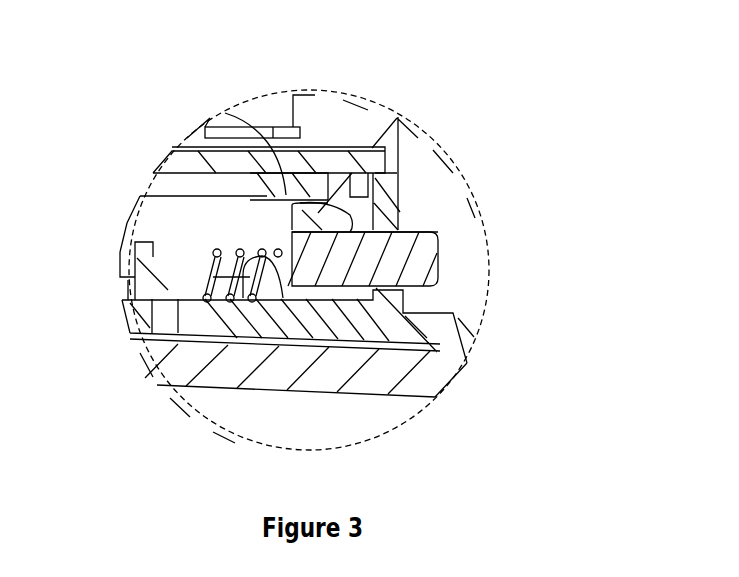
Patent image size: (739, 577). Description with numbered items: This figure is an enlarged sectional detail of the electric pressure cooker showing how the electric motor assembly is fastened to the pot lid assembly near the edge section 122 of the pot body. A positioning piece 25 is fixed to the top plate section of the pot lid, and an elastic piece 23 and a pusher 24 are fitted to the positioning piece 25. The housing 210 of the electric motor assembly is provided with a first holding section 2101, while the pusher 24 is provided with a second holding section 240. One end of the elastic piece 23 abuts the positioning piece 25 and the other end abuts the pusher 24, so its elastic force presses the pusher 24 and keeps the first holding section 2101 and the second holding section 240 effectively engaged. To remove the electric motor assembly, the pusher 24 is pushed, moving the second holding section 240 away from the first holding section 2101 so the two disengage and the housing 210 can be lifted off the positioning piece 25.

The second holding section 240 is at (225, 127).
The housing 210 is at (371, 147).
The first holding section 2101 is at (327, 193).
The elastic piece 23 is at (218, 253).
The pusher 24 is at (433, 237).
The positioning piece 25 is at (453, 315).
The edge section 122 is at (240, 358).